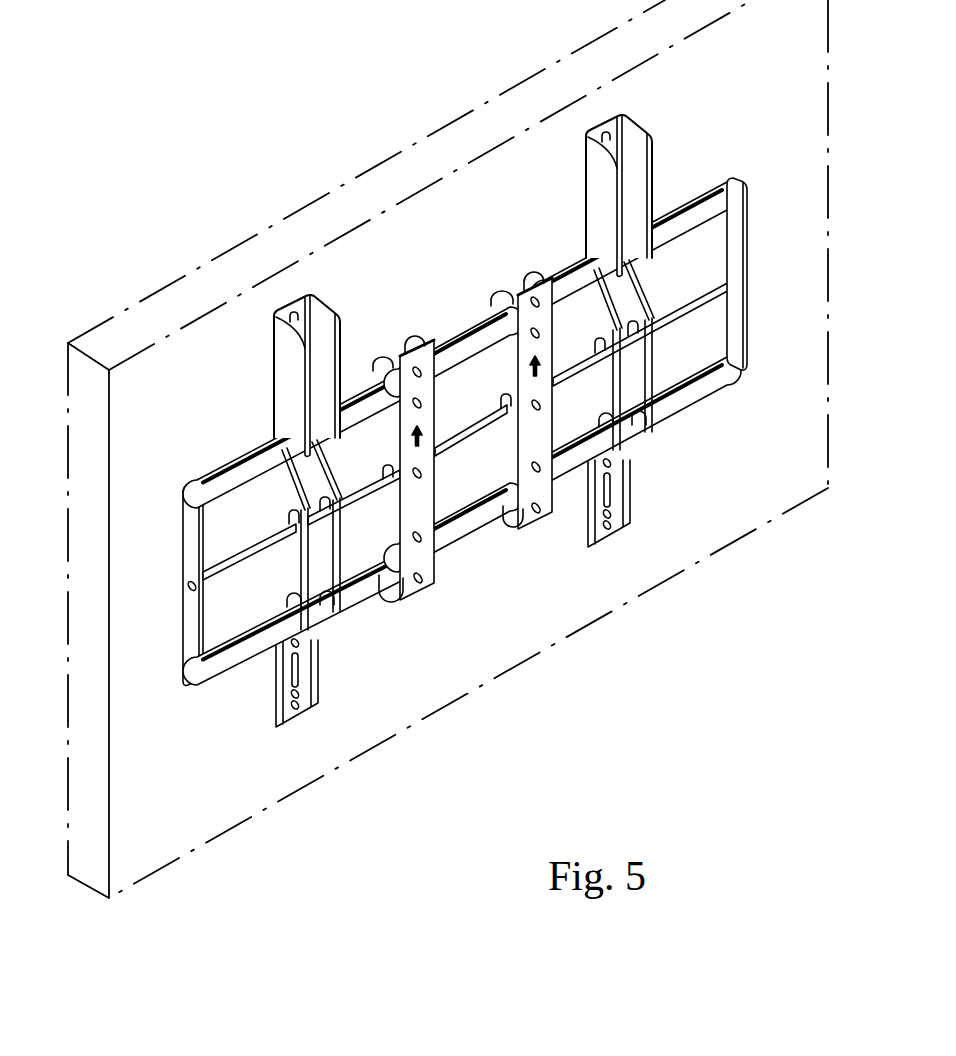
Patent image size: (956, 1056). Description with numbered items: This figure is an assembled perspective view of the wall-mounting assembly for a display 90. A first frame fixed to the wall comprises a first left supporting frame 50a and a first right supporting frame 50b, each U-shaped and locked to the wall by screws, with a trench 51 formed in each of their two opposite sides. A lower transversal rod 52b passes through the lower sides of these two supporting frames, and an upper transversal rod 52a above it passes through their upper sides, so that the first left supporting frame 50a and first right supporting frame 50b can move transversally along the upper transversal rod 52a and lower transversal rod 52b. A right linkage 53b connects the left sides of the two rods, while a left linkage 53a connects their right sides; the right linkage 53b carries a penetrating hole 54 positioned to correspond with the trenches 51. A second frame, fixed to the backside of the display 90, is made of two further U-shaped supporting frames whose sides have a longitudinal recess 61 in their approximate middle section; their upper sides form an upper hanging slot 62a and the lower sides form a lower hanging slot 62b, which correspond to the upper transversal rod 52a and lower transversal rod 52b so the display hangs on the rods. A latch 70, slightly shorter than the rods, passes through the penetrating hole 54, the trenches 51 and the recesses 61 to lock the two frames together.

The display 90 is at (425, 138).
The upper hanging slot 62a is at (278, 431).
The lower hanging slot 62b is at (283, 610).
The first left supporting frame 50a is at (498, 298).
The first right supporting frame 50b is at (418, 592).
The upper transversal rod 52a is at (468, 323).
The lower transversal rod 52b is at (460, 528).
The left linkage 53a is at (728, 272).
The right linkage 53b is at (190, 640).
The trench 51 is at (387, 472).
The longitudinal recess 61 is at (287, 525).
The latch 70 is at (485, 428).
The penetrating hole 54 is at (188, 586).